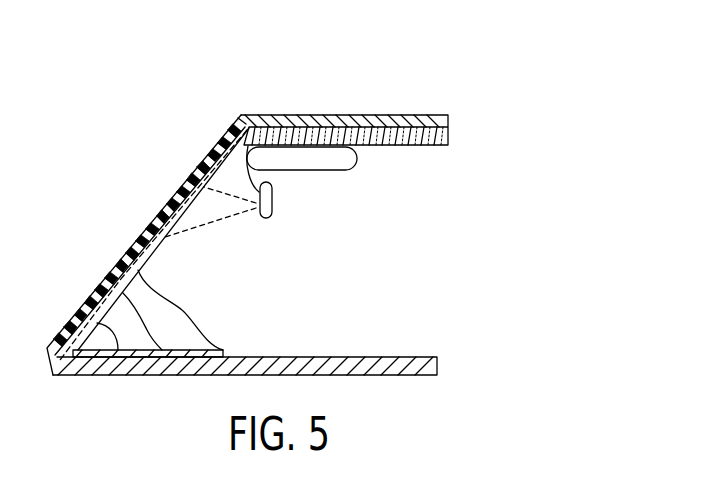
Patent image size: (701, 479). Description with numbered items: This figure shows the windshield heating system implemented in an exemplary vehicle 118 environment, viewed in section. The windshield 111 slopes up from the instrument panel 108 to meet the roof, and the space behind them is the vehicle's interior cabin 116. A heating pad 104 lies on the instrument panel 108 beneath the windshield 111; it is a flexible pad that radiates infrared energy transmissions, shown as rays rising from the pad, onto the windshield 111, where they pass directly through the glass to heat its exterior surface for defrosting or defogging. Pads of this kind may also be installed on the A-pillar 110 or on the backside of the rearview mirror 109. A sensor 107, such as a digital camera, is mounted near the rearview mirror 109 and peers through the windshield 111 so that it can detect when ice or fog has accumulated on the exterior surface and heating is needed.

The heating pad 104 is at (232, 351).
The sensor 107 is at (262, 212).
The instrument panel 108 is at (438, 362).
The rearview mirror 109 is at (273, 200).
The A-pillar 110 is at (157, 249).
The windshield 111 is at (181, 188).
The interior cabin 116 is at (480, 243).
The vehicle 118 is at (409, 106).